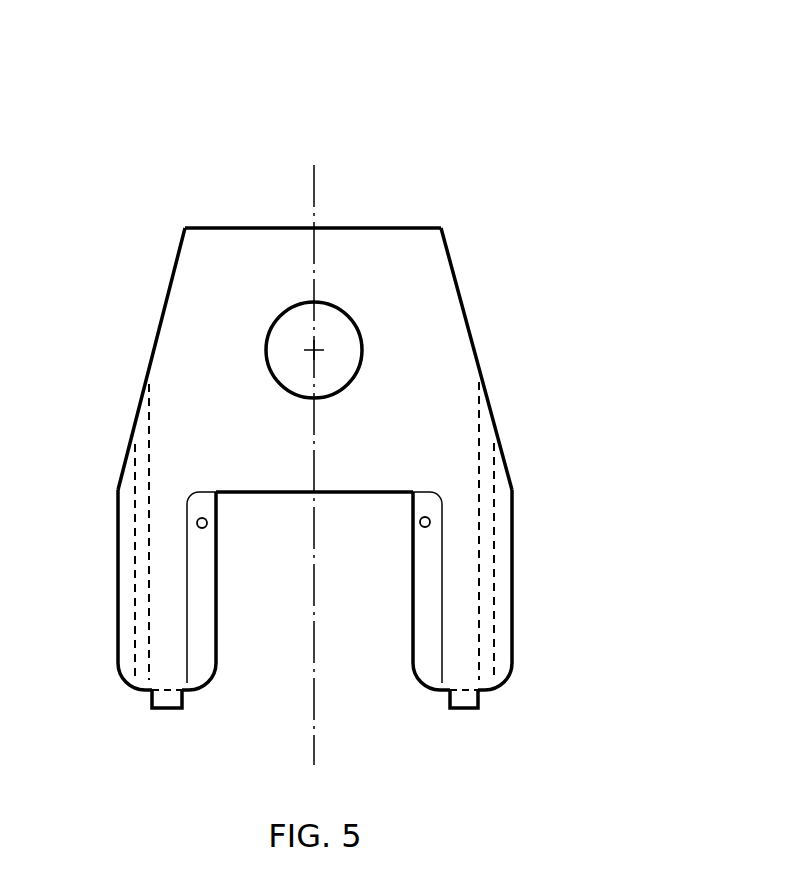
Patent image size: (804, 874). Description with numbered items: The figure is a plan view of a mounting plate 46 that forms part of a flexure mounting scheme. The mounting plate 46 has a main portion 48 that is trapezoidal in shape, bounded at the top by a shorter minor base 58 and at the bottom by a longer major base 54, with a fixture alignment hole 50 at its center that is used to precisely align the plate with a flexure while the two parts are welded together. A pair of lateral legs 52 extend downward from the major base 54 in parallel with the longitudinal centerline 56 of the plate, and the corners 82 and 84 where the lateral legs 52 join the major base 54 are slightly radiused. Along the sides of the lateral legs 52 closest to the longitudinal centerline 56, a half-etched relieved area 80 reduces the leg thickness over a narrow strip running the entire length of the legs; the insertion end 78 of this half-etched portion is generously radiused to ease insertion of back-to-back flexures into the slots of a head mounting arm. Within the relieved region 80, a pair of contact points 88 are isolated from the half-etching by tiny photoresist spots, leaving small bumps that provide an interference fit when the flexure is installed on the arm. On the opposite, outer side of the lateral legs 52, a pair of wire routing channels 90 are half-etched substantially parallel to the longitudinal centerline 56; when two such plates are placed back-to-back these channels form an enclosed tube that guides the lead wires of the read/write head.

The mounting plate 46 is at (476, 162).
The main portion 48 is at (388, 255).
The fixture alignment hole 50 is at (266, 338).
The lateral legs 52 is at (162, 590).
The major base 54 is at (244, 491).
The longitudinal centerline 56 is at (311, 188).
The minor base 58 is at (212, 227).
The insertion end 78 is at (413, 673).
The half-etched relieved area 80 is at (203, 580).
The corner 82 is at (439, 495).
The corner 84 is at (414, 490).
The contact points 88 is at (418, 521).
The wire routing channels 90 is at (138, 518).